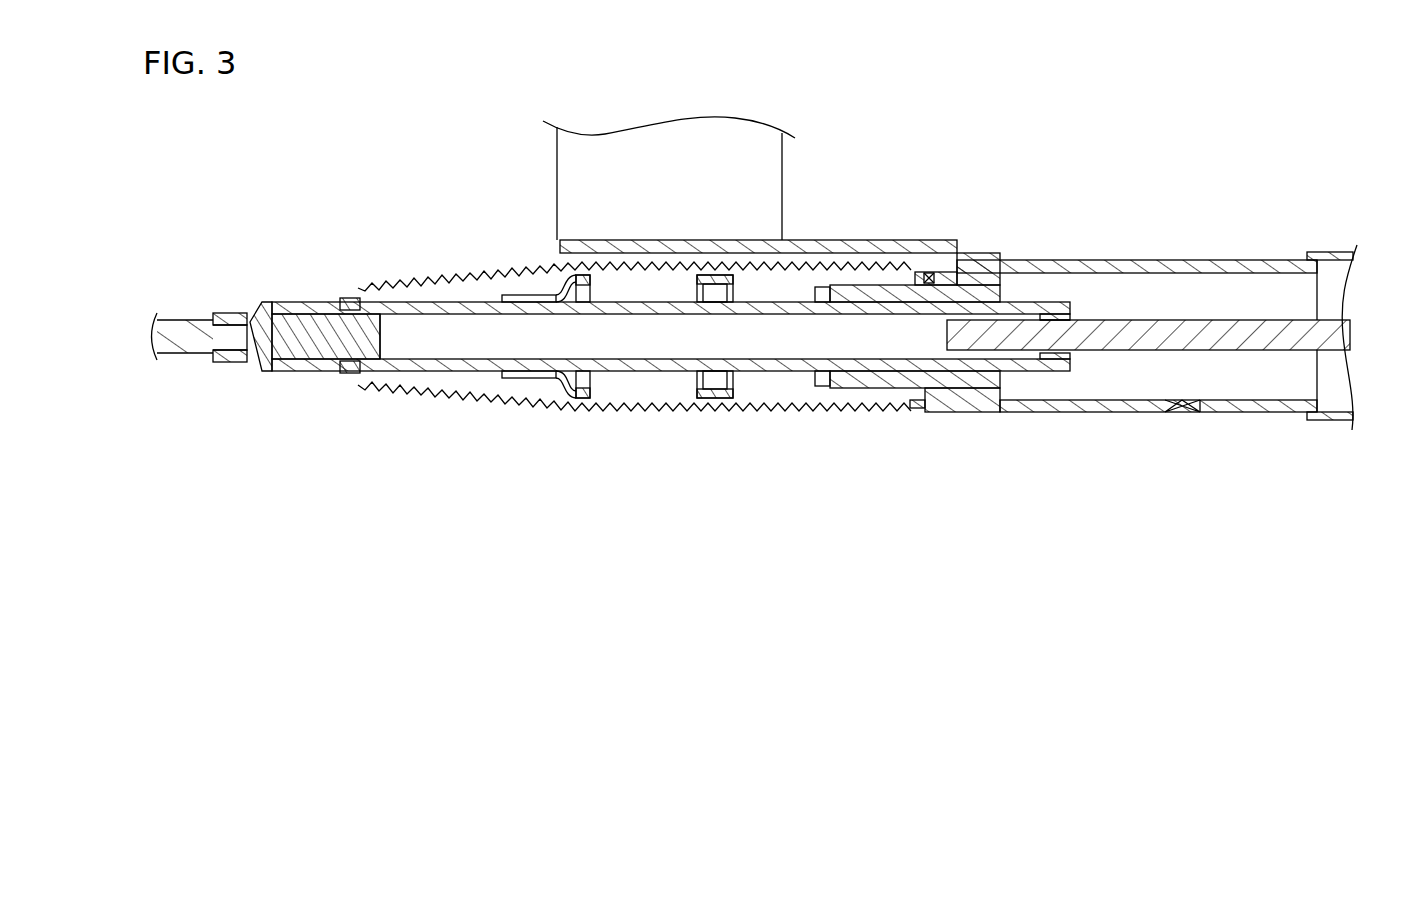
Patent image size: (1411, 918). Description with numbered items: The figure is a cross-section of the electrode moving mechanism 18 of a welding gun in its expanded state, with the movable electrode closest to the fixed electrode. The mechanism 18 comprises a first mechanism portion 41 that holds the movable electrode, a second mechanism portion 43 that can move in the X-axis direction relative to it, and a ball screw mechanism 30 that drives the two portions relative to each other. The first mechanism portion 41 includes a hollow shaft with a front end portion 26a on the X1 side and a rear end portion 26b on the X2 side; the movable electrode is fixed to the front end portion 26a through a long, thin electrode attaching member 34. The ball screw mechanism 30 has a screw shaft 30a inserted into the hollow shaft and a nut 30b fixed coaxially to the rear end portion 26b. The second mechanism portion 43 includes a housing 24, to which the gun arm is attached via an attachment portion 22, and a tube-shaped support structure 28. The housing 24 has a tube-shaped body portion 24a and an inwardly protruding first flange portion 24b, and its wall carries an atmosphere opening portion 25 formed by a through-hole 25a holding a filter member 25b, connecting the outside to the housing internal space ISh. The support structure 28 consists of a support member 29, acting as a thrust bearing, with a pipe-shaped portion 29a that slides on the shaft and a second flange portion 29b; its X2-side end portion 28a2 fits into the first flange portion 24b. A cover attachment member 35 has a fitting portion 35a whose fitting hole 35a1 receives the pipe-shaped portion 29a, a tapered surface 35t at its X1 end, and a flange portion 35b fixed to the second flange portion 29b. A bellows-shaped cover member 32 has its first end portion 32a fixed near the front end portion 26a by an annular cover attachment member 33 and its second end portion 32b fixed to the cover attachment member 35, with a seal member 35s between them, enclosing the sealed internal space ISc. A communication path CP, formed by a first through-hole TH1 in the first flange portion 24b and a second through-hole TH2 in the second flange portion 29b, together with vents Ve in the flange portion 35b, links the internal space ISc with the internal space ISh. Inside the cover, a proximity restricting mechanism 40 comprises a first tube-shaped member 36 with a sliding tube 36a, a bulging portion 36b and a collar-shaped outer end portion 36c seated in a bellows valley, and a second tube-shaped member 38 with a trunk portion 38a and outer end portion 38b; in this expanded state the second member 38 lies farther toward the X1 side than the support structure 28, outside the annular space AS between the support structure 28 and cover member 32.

The electrode moving mechanism 18 is at (1346, 212).
The attachment portion 22 is at (546, 169).
The housing 24 is at (948, 531).
The body portion 24a is at (1110, 412).
The first flange portion 24b is at (983, 412).
The atmosphere opening portion 25 is at (1255, 469).
The through-hole 25a is at (1180, 412).
The filter member 25b is at (1212, 412).
The front end portion 26a is at (290, 303).
The rear end portion 26b is at (1048, 372).
The support structure 28 is at (935, 109).
The X2-side end portion 28a2 is at (1040, 290).
The support member 29 is at (858, 253).
The pipe-shaped portion 29a is at (868, 390).
The second flange portion 29b is at (961, 413).
The ball screw mechanism 30 is at (1120, 210).
The screw shaft 30a is at (1204, 320).
The nut 30b is at (1073, 318).
The cover member 32 is at (411, 393).
The first end portion 32a is at (347, 374).
The second end portion 32b is at (912, 410).
The cover attachment member 33 is at (338, 373).
The electrode attaching member 34 is at (184, 328).
The cover attachment member 35 is at (875, 154).
The fitting portion 35a is at (880, 285).
The fitting hole 35a1 is at (838, 301).
The flange portion 35b is at (945, 272).
The seal member 35s is at (915, 390).
The tapered surface 35t is at (827, 389).
The first tube-shaped member 36 is at (641, 471).
The sliding tube 36a is at (520, 379).
The bulging portion 36b is at (565, 400).
The outer end portion 36c is at (591, 402).
The second tube-shaped member 38 is at (766, 471).
The trunk portion 38a is at (702, 399).
The outer end portion 38b is at (731, 399).
The proximity restricting mechanism 40 is at (740, 513).
The first mechanism portion 41 is at (244, 388).
The second mechanism portion 43 is at (1332, 432).
The annular space AS is at (824, 253).
The communication path CP is at (1082, 179).
The internal space ISc is at (767, 386).
The internal space ISh is at (1278, 290).
The first through-hole TH1 is at (1030, 260).
The second through-hole TH2 is at (967, 260).
The vent Ve is at (923, 272).
The X1 side X1 is at (1080, 618).
The X2 side X2 is at (1153, 618).